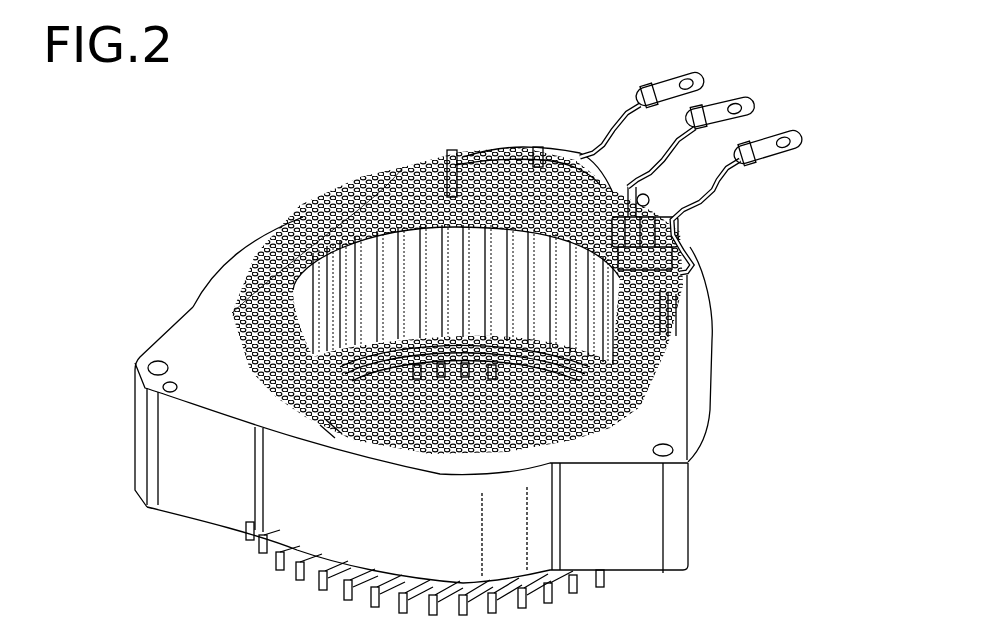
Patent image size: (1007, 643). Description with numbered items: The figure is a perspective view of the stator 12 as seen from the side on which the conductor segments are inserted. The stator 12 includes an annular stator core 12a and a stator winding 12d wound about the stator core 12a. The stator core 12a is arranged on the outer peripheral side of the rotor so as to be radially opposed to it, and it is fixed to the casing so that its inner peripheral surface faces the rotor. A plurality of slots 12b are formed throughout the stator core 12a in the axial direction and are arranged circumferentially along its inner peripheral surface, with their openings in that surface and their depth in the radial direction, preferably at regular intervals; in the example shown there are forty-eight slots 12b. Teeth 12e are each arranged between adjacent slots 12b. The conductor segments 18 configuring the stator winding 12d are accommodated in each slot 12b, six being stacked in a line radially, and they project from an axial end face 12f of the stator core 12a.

The stator 12 is at (278, 113).
The stator core 12a is at (646, 574).
The slots 12b is at (337, 297).
The stator winding 12d is at (682, 313).
The teeth 12e is at (302, 204).
The axial end face 12f is at (693, 292).
The conductor segments 18 is at (320, 423).